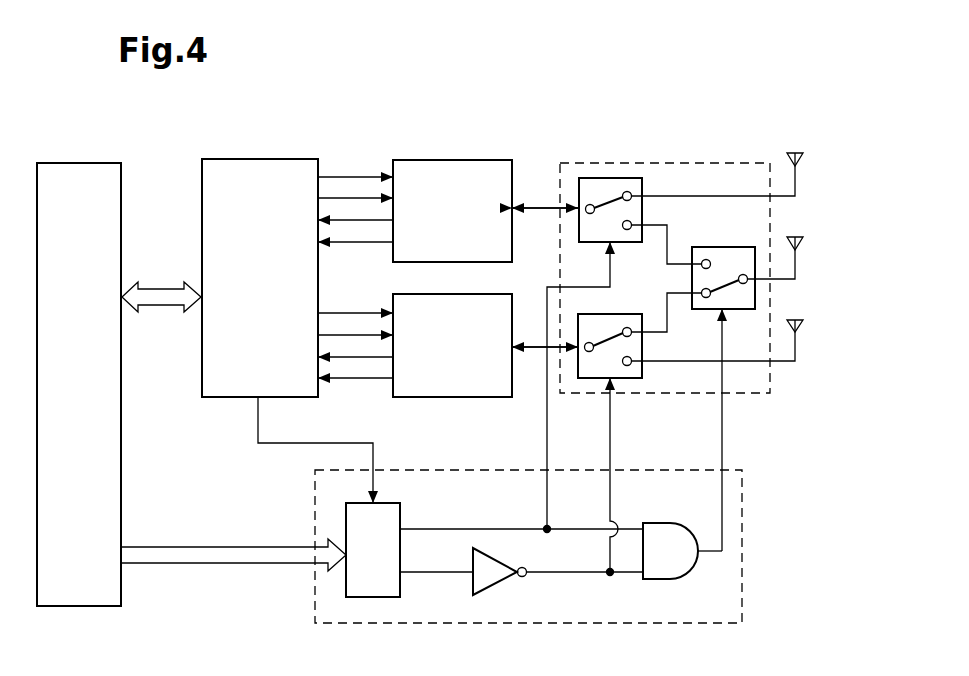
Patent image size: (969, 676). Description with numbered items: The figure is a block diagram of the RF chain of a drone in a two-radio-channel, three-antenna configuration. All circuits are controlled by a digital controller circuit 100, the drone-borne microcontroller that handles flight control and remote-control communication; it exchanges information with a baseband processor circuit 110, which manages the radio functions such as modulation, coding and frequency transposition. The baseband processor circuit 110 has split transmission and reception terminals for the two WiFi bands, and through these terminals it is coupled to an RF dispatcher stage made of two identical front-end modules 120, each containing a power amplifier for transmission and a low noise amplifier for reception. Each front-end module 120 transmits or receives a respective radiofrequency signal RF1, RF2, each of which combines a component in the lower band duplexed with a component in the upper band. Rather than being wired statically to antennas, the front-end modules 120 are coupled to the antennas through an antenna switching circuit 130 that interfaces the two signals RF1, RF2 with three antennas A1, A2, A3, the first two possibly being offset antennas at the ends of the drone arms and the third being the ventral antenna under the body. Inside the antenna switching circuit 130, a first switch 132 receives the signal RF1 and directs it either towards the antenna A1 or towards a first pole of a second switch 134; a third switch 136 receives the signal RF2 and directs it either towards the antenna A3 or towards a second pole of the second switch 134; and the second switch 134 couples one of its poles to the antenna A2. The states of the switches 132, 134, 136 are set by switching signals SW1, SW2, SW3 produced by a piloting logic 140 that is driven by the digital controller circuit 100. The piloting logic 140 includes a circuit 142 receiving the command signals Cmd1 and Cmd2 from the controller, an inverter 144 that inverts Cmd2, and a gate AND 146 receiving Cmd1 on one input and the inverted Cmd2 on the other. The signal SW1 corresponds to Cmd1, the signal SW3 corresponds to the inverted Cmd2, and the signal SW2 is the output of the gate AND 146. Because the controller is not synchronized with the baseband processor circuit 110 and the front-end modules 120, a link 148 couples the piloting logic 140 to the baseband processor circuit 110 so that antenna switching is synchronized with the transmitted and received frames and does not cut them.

The digital controller circuit 100 is at (63, 163).
The baseband processor circuit 110 is at (222, 159).
The front-end module 120 is at (408, 160).
The antenna switching circuit 130 is at (667, 163).
The first switch 132 is at (598, 178).
The second switch 134 is at (725, 247).
The third switch 136 is at (632, 378).
The piloting logic 140 is at (742, 585).
The circuit 142 is at (346, 583).
The inverter 144 is at (495, 590).
The gate AND 146 is at (657, 580).
The link 148 is at (280, 444).
The radiofrequency signal RF1 is at (540, 206).
The radiofrequency signal RF2 is at (541, 352).
The antenna A1 is at (800, 162).
The antenna A2 is at (800, 246).
The antenna A3 is at (800, 328).
The switching signal SW1 is at (547, 485).
The switching signal SW2 is at (724, 433).
The switching signal SW3 is at (612, 436).
The switching signal Cmd1 is at (422, 528).
The switching signal Cmd2 is at (425, 573).